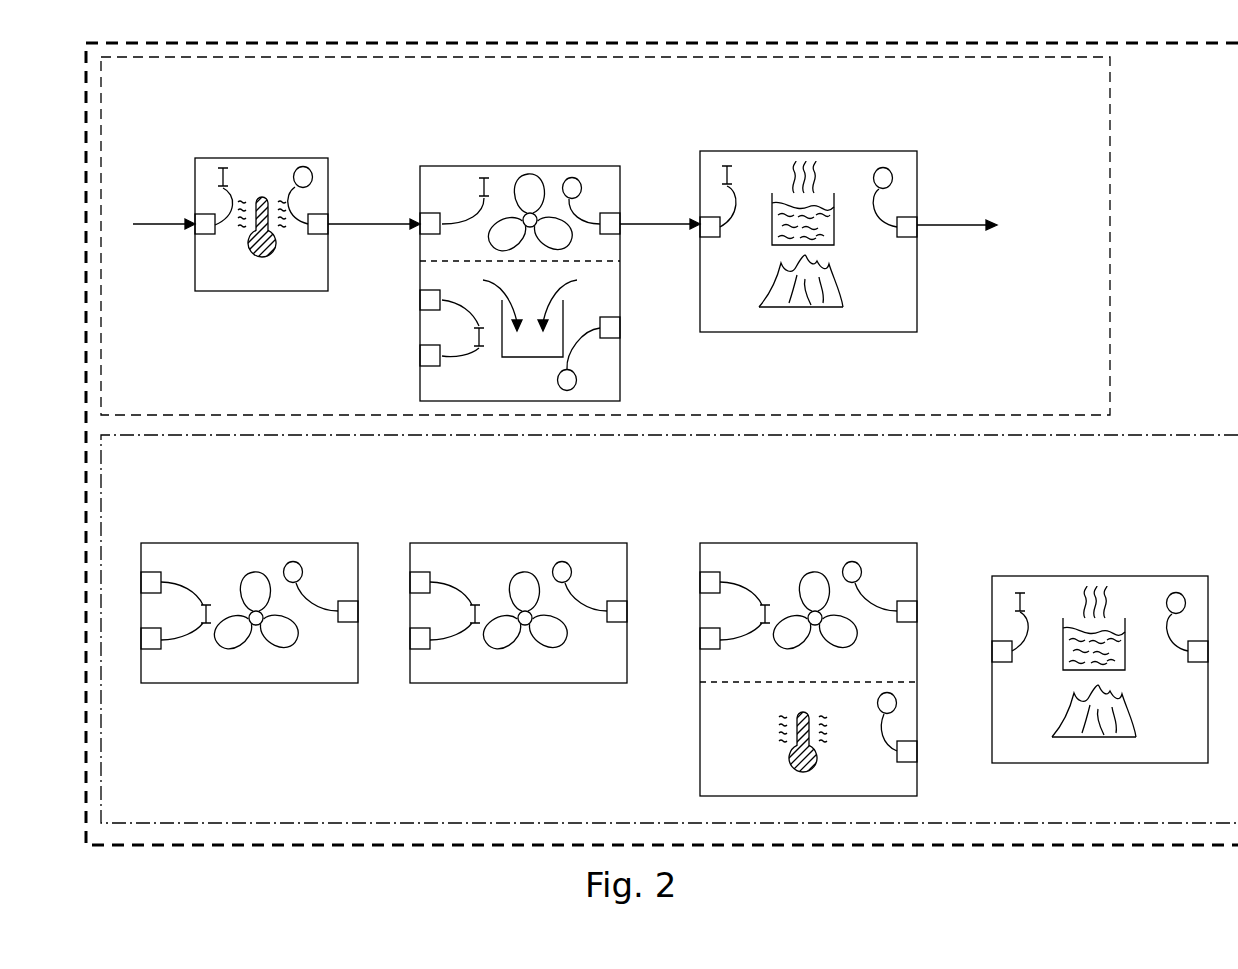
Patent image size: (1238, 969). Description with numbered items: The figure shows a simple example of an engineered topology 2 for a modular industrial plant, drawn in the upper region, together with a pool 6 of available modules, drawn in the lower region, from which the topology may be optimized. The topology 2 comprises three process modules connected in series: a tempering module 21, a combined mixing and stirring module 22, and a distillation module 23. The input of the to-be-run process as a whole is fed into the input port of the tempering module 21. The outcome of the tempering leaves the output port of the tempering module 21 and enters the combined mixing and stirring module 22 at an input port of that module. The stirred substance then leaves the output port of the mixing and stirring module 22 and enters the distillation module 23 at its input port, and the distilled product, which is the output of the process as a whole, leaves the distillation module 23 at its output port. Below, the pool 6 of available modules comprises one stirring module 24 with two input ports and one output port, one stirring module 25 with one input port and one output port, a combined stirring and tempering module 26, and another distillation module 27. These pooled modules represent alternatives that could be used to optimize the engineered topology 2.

The engineered topology 2 is at (1111, 226).
The pool of available modules 6 is at (1164, 435).
The tempering module 21 is at (247, 158).
The combined mixing and stirring module 22 is at (517, 166).
The distillation module 23 is at (768, 151).
The stirring module 24 is at (239, 543).
The stirring module 25 is at (507, 543).
The combined stirring and tempering module 26 is at (797, 543).
The distillation module 27 is at (1058, 576).